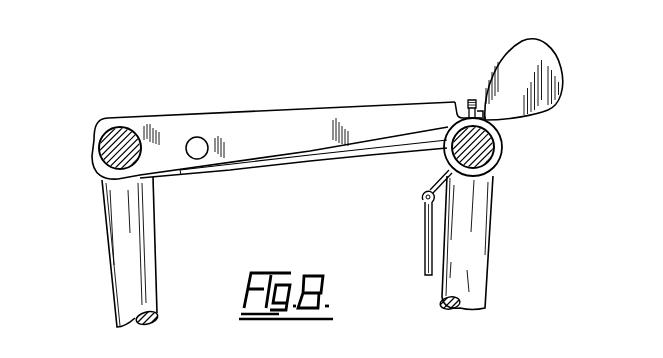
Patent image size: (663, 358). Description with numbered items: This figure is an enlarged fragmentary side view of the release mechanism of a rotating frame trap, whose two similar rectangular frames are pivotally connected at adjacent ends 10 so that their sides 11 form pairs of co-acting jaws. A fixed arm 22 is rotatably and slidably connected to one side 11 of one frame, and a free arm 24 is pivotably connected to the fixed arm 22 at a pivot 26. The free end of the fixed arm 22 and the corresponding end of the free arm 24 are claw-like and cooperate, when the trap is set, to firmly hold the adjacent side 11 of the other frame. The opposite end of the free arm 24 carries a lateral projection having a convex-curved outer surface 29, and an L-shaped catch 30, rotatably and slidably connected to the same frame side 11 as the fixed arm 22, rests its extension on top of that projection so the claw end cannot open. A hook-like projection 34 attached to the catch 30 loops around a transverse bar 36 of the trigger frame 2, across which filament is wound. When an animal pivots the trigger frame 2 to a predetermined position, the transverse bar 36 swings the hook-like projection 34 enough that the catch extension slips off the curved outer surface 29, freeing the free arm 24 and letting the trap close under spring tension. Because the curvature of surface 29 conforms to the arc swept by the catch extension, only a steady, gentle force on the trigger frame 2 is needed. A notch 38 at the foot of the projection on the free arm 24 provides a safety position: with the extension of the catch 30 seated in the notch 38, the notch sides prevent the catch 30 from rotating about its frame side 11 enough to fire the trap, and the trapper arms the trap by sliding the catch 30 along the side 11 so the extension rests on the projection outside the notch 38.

The trigger frame 2 is at (425, 246).
The adjacent ends 10 is at (122, 257).
The side 11 is at (542, 183).
The fixed arm 22 is at (167, 116).
The free arm 24 is at (259, 144).
The pivot 26 is at (193, 150).
The convex-curved outer surface 29 is at (462, 104).
The L-shaped catch 30 is at (500, 128).
The hook-like projection 34 is at (435, 181).
The transverse bar 36 is at (420, 198).
The notch 38 is at (459, 100).